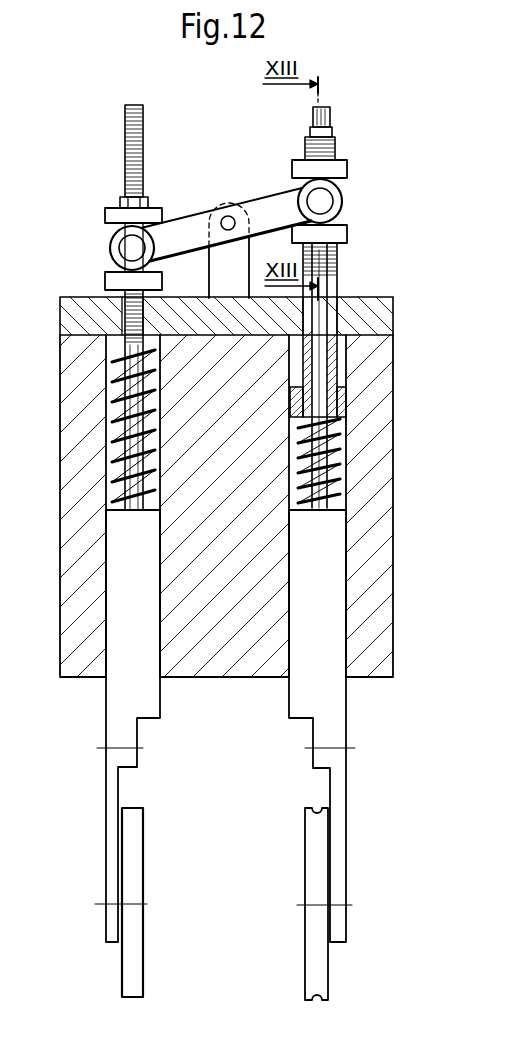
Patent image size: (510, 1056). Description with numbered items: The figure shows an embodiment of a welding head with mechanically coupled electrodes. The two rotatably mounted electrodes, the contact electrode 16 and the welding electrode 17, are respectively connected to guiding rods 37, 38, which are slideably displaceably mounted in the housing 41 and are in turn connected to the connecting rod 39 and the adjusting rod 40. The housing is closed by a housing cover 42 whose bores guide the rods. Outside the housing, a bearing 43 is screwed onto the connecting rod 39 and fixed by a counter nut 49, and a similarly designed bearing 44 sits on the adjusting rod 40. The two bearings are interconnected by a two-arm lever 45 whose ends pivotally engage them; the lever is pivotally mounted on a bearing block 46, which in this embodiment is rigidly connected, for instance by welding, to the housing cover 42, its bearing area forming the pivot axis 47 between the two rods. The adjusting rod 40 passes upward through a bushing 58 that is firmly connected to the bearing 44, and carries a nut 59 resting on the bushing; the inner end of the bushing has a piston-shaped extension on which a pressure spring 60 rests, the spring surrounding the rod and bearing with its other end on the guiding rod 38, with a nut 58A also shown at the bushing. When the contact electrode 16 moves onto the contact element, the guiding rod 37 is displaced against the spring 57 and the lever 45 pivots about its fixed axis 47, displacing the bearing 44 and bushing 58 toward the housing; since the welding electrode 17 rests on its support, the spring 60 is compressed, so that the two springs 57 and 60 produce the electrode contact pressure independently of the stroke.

The contact electrode 16 is at (130, 972).
The welding electrode 17 is at (318, 967).
The guiding rod 37 is at (125, 591).
The guiding rod 38 is at (335, 626).
The connecting rod 39 is at (130, 450).
The adjusting rod 40 is at (320, 491).
The housing 41 is at (376, 563).
The housing cover 42 is at (387, 316).
The bearing 43 is at (104, 212).
The bearing 44 is at (340, 168).
The lever 45 is at (190, 228).
The bearing block 46 is at (237, 253).
The pivot axis 47 is at (229, 216).
The counter nut 49 is at (122, 200).
The spring 57 is at (107, 396).
The bushing 58 is at (333, 366).
The nut 58A is at (340, 406).
The nut 59 is at (311, 134).
The pressure spring 60 is at (335, 451).